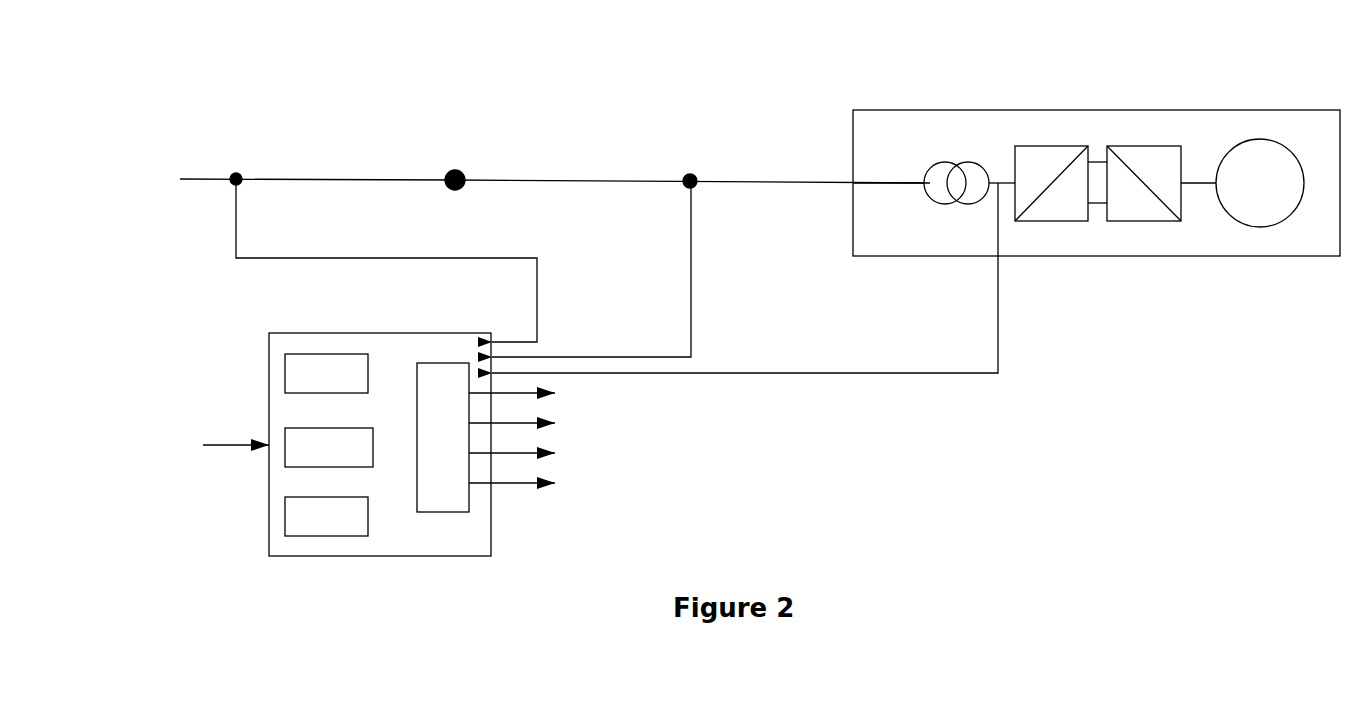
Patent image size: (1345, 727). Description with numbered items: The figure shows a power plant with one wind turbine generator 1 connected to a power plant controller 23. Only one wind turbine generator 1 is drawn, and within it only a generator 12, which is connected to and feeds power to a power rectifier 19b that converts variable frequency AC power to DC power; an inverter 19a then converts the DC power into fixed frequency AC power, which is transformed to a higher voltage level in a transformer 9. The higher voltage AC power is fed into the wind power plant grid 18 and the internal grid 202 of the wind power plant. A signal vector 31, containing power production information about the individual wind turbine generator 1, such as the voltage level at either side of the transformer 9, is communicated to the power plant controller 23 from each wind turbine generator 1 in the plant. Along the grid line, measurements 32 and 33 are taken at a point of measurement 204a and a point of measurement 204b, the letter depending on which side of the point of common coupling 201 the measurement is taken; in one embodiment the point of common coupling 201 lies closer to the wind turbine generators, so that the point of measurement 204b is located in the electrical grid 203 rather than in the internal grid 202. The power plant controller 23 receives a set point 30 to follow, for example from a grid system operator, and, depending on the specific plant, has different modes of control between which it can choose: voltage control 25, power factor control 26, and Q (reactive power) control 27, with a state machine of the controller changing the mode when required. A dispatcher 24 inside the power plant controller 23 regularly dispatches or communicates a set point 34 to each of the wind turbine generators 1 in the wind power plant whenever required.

The wind turbine generator 1 is at (853, 110).
The transformer 9 is at (945, 163).
The generator 12 is at (1258, 139).
The wind power plant grid 18 is at (878, 183).
The inverter 19a is at (1040, 146).
The power rectifier 19b is at (1145, 146).
The power plant controller 23 is at (369, 333).
The dispatcher 24 is at (425, 363).
The voltage control 25 is at (285, 372).
The power factor control 26 is at (285, 440).
The Q (reactive power) control 27 is at (285, 522).
The set point 30 is at (224, 443).
The signal vector 31 is at (870, 373).
The measurement 32 is at (691, 290).
The measurement 33 is at (236, 252).
The set point 34 is at (518, 485).
The point of common coupling 201 is at (455, 170).
The internal grid 202 is at (573, 180).
The electrical grid 203 is at (333, 178).
The point of measurement 204a is at (690, 174).
The point of measurement 204b is at (236, 173).